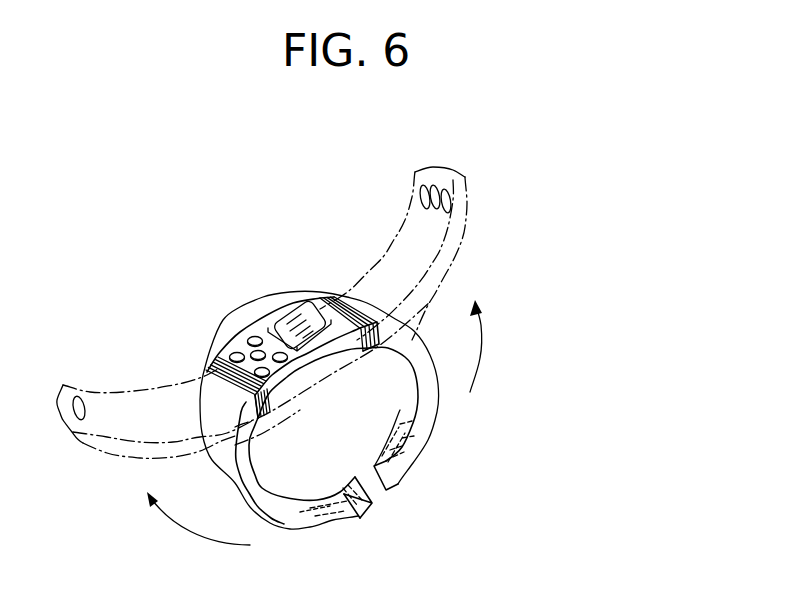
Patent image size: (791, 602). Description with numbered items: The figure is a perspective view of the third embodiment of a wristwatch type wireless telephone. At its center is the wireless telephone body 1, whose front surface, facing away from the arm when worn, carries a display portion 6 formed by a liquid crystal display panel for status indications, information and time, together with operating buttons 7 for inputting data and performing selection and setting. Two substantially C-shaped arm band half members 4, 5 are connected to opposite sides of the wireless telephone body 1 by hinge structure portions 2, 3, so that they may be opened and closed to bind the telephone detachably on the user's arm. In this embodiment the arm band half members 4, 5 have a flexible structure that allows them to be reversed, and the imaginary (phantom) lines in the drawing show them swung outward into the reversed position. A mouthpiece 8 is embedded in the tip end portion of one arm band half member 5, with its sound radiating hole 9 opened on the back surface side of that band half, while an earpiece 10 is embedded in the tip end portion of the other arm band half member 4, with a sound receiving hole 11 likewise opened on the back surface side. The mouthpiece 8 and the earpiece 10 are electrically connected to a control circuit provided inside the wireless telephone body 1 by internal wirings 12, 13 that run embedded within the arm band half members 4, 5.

The wireless telephone body 1 is at (338, 358).
The hinge structure portion 2 is at (371, 348).
The hinge structure portion 3 is at (267, 410).
The arm band half member 4 is at (425, 367).
The arm band half member 5 is at (238, 480).
The display portion 6 is at (292, 312).
The operating buttons 7 is at (250, 350).
The mouthpiece 8 is at (362, 516).
The sound radiating hole 9 is at (340, 490).
The earpiece 10 is at (416, 458).
The sound receiving hole 11 is at (388, 448).
The internal wiring 12 is at (413, 437).
The internal wiring 13 is at (310, 503).